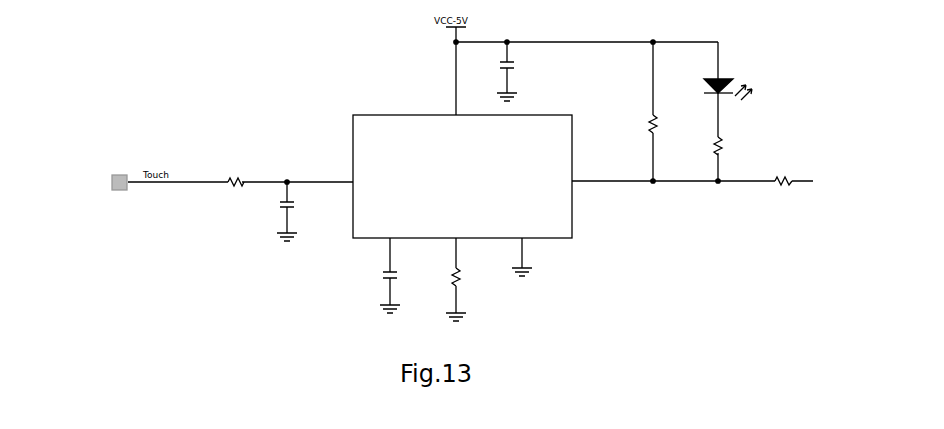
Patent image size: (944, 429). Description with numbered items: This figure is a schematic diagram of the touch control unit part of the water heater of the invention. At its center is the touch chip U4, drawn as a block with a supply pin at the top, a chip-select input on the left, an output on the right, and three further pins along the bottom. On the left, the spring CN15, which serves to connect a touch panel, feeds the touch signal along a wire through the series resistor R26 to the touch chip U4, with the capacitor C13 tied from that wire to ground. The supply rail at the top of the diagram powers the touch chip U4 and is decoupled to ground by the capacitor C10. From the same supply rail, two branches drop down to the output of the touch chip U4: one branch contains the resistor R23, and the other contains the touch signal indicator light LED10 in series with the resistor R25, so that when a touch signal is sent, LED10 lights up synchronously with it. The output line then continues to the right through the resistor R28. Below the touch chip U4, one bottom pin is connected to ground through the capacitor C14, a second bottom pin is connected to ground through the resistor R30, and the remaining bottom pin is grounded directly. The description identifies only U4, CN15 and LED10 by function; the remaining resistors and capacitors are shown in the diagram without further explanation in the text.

The spring CN15 is at (93, 185).
The resistor R26 is at (233, 175).
The capacitor C13 is at (296, 211).
The touch chip U4 is at (459, 178).
The capacitor C10 is at (519, 71).
The resistor R23 is at (663, 124).
The resistor R25 is at (729, 146).
The touch signal indicator light LED10 is at (745, 89).
The resistor R28 is at (785, 190).
The capacitor C14 is at (377, 275).
The resistor R30 is at (464, 279).